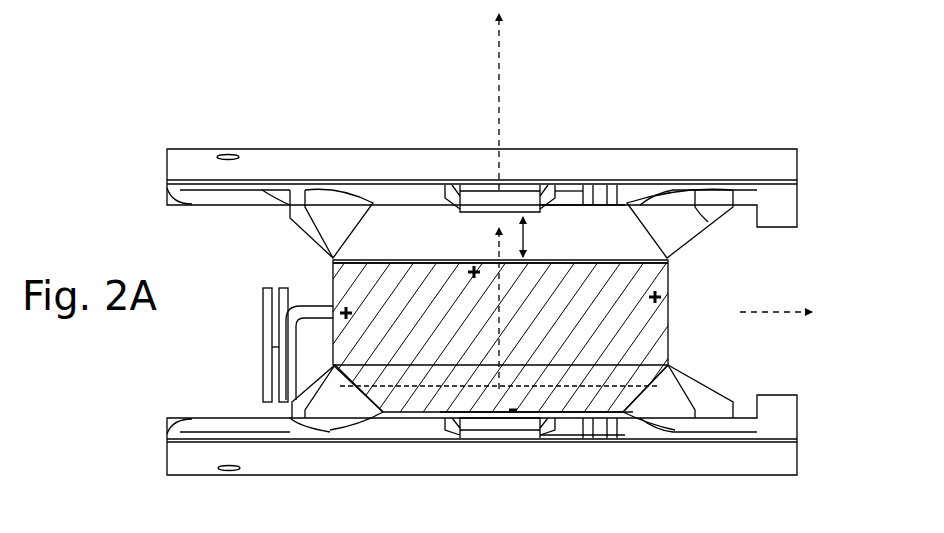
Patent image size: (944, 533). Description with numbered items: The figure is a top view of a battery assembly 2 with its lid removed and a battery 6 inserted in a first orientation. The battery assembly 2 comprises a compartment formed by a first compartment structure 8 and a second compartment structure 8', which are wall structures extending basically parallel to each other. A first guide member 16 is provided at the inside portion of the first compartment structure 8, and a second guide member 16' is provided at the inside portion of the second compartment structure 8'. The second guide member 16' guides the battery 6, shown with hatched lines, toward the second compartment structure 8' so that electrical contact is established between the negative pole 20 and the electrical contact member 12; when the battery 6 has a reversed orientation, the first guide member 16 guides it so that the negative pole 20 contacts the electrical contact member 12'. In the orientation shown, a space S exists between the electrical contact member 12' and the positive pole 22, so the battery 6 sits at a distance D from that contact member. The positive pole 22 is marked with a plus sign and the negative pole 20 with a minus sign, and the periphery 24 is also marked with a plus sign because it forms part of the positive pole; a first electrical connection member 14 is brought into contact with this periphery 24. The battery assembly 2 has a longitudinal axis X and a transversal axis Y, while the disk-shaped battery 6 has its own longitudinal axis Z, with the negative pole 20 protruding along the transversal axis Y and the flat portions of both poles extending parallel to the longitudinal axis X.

The battery assembly 2 is at (245, 85).
The battery 6 is at (680, 288).
The first compartment structure 8 is at (482, 463).
The second compartment structure 8' is at (482, 151).
The electrical contact member 12 is at (535, 468).
The electrical contact member 12' is at (535, 155).
The first electrical connection member 14 is at (333, 306).
The first guide member 16 is at (533, 385).
The second guide member 16' is at (519, 232).
The negative pole 20 is at (487, 410).
The positive pole 22 is at (390, 255).
The periphery 24 is at (650, 330).
The space S is at (423, 237).
The distance D is at (532, 237).
The longitudinal axis X is at (776, 282).
The transversal axis Y is at (503, 62).
The longitudinal axis Z is at (496, 252).